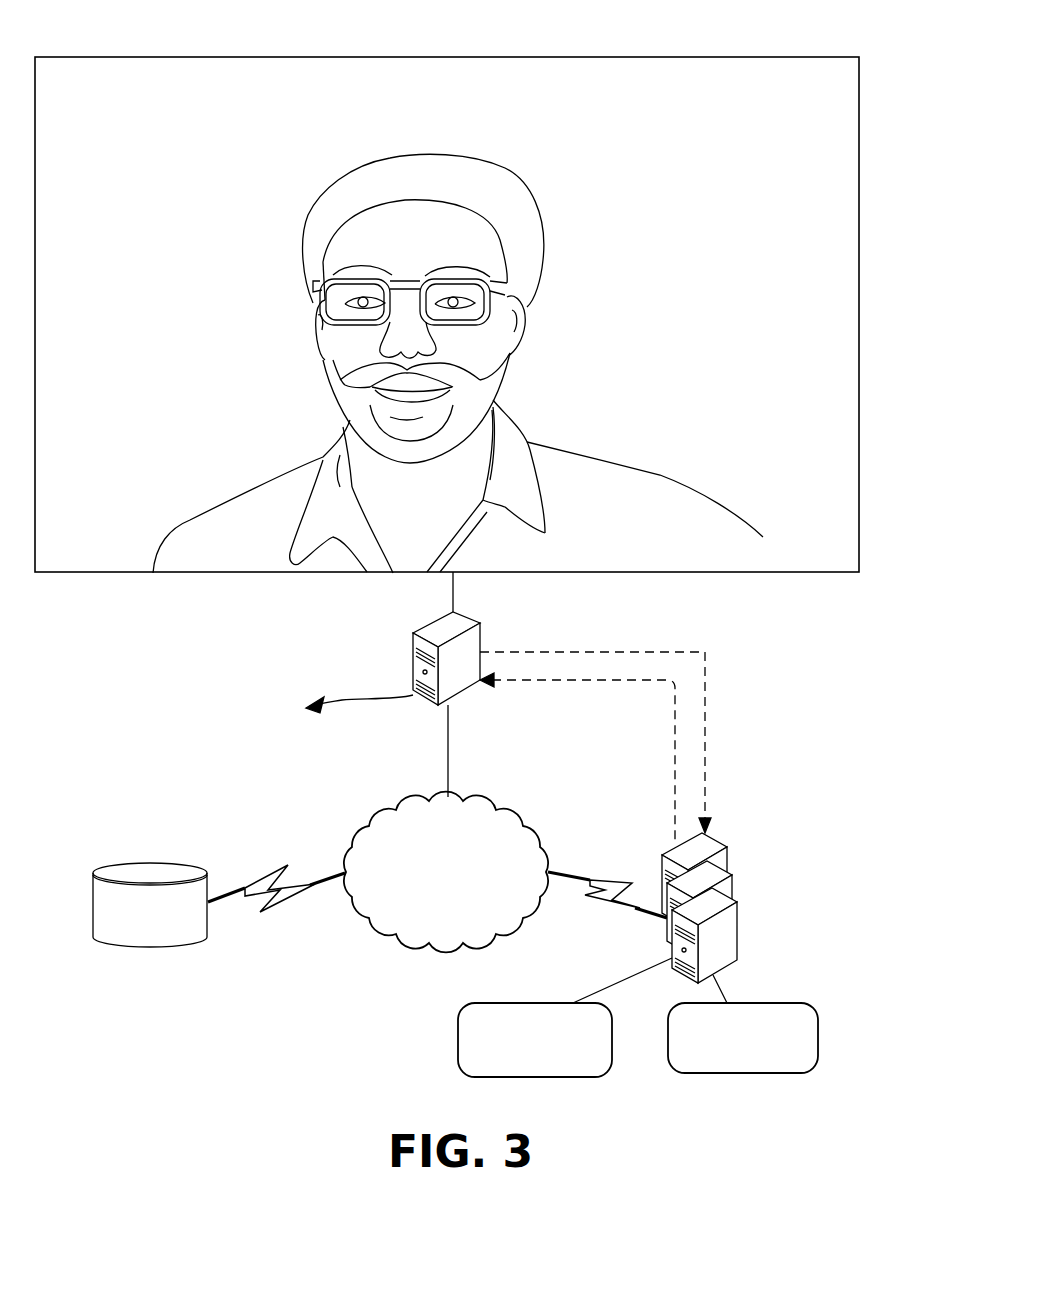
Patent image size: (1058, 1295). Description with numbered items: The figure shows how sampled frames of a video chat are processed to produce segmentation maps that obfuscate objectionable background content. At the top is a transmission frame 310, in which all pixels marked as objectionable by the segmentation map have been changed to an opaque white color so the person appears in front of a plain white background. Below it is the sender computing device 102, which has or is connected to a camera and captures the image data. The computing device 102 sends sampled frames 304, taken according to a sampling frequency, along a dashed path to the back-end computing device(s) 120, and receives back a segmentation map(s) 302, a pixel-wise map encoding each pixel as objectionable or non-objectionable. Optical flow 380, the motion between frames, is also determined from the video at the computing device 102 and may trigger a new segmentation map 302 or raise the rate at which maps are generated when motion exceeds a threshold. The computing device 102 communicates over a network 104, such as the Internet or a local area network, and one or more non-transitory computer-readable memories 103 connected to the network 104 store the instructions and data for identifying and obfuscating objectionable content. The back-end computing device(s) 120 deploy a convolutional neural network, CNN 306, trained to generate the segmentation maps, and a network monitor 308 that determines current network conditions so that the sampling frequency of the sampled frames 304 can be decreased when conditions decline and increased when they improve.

The transmission frame 310 is at (137, 57).
The computing device 102 is at (413, 670).
The optical flow 380 is at (280, 713).
The sampled frames 304 is at (697, 653).
The segmentation map 302 is at (677, 728).
The network 104 is at (437, 872).
The non-transitory computer-readable memories 103 is at (150, 905).
The back-end computing device(s) 120 is at (737, 920).
The network monitor 308 is at (535, 1040).
The convolutional neural network (CNN) 306 is at (743, 1038).